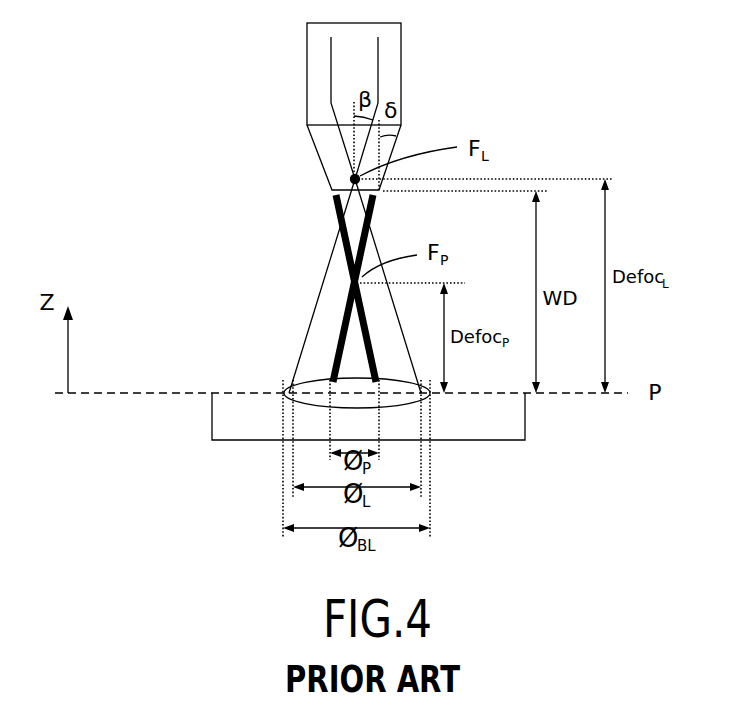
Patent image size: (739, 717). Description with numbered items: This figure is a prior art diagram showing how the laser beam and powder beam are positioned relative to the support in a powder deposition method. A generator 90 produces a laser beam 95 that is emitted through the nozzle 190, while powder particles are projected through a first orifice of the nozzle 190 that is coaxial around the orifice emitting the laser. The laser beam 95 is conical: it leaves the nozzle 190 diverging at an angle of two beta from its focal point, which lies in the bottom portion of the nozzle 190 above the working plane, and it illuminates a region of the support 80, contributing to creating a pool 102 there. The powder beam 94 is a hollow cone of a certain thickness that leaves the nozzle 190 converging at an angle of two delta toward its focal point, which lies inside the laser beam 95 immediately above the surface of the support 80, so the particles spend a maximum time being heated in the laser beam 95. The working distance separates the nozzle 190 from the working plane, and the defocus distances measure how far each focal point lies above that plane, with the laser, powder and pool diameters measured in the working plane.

The generator 90 is at (323, 80).
The nozzle 190 is at (330, 147).
The powder beam 94 is at (334, 207).
The laser beam 95 is at (328, 298).
The pool 102 is at (313, 385).
The support 80 is at (232, 410).